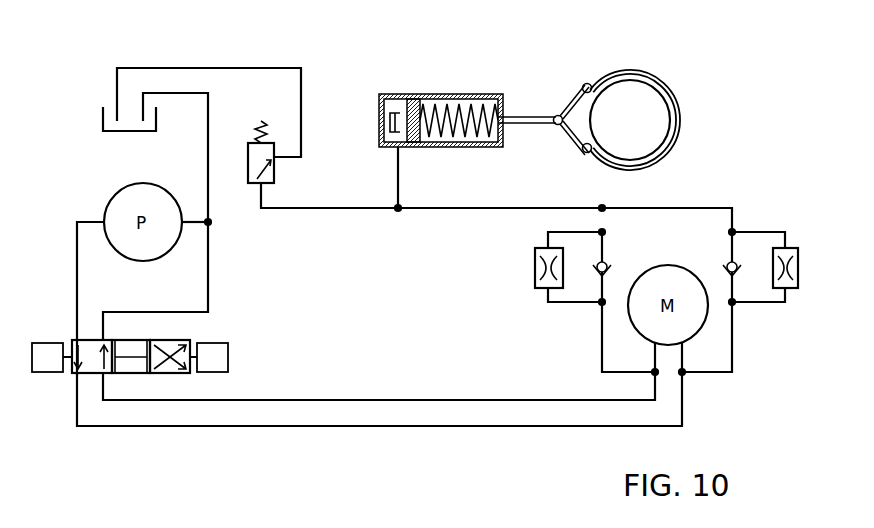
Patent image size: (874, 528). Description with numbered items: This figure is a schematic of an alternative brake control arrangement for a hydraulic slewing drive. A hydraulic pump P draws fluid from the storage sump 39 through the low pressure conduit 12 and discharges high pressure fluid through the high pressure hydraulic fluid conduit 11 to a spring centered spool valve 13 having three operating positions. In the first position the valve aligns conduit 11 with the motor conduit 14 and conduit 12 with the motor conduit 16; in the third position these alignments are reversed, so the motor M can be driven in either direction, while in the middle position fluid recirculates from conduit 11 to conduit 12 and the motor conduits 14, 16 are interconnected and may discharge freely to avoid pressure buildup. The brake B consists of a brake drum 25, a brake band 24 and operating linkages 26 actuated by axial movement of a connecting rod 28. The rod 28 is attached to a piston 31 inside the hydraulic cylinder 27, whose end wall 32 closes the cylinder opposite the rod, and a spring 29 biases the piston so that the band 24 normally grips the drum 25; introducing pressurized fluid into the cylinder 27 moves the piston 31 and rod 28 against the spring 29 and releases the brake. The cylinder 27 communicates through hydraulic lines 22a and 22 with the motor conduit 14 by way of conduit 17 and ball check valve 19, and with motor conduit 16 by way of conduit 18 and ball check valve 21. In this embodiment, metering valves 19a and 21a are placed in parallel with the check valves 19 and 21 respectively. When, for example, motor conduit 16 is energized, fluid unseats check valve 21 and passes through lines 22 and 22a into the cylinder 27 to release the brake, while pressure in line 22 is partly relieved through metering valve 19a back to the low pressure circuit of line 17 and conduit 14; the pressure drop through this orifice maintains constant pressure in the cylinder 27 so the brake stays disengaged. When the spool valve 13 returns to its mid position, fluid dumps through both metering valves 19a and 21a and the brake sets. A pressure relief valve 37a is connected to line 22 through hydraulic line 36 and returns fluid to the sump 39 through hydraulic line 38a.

The high pressure hydraulic fluid conduit 11 is at (79, 281).
The low pressure conduit 12 is at (205, 152).
The spring centered spool valve 13 is at (178, 340).
The motor conduit 14 is at (435, 427).
The motor conduit 16 is at (398, 400).
The conduit 17 is at (735, 345).
The conduit 18 is at (600, 342).
The check valve 19 is at (738, 265).
The metering valve 19a is at (798, 252).
The check valve 21 is at (608, 266).
The metering valve 21a is at (535, 270).
The conduit 22 is at (497, 210).
The hydraulic line 22a is at (397, 179).
The brake band 24 is at (648, 76).
The brake drum 25 is at (641, 118).
The operating linkages 26 is at (574, 97).
The hydraulic cylinder 27 is at (416, 100).
The connecting rod 28 is at (523, 116).
The spring 29 is at (482, 139).
The piston 31 is at (412, 145).
The cylinder end wall 32 is at (389, 100).
The hydraulic line 36 is at (290, 210).
The pressure relief valve 37a is at (268, 157).
The hydraulic line 38a is at (237, 68).
The storage sump 39 is at (100, 123).